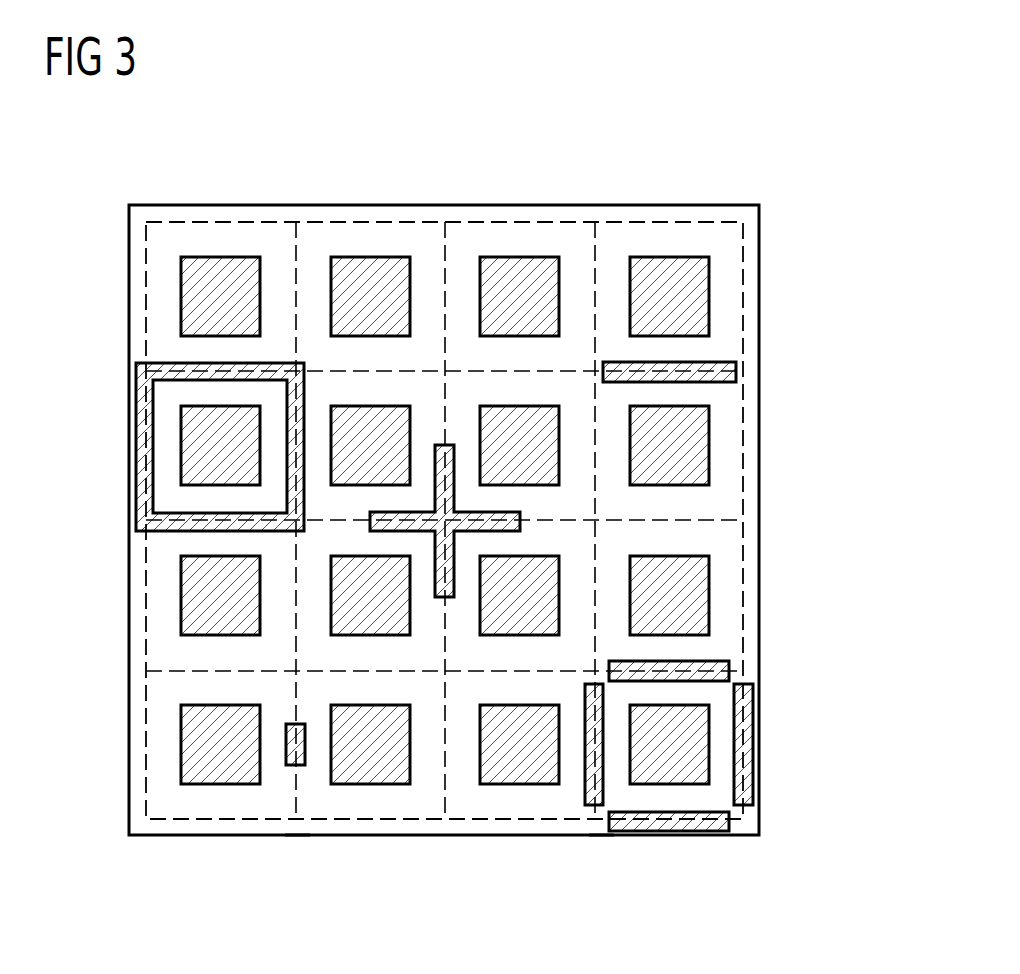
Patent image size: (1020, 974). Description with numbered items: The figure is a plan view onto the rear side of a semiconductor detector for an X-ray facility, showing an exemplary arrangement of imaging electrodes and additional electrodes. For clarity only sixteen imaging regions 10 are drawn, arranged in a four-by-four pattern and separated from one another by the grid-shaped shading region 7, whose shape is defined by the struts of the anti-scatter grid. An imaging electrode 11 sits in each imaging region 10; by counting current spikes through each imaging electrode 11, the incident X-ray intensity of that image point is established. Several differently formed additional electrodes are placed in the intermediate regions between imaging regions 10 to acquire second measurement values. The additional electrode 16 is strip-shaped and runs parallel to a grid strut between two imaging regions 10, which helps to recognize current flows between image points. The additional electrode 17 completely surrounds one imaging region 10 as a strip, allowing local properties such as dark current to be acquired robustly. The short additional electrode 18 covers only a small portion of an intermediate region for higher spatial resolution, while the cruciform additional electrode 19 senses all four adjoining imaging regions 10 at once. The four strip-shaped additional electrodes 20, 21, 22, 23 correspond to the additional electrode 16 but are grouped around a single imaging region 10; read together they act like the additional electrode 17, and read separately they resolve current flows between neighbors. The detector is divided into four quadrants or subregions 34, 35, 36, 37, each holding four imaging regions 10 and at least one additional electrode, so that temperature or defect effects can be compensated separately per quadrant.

The shading region 7 is at (697, 217).
The imaging region 10 is at (661, 249).
The imaging electrode 11 is at (218, 272).
The additional electrode 16 is at (710, 368).
The additional electrode 17 is at (168, 364).
The additional electrode 18 is at (290, 758).
The additional electrode 19 is at (440, 597).
The additional electrode 20 is at (715, 668).
The additional electrode 21 is at (745, 742).
The additional electrode 22 is at (683, 824).
The additional electrode 23 is at (588, 786).
The subregion 34 is at (312, 217).
The subregion 35 is at (601, 217).
The subregion 36 is at (297, 835).
The subregion 37 is at (601, 835).